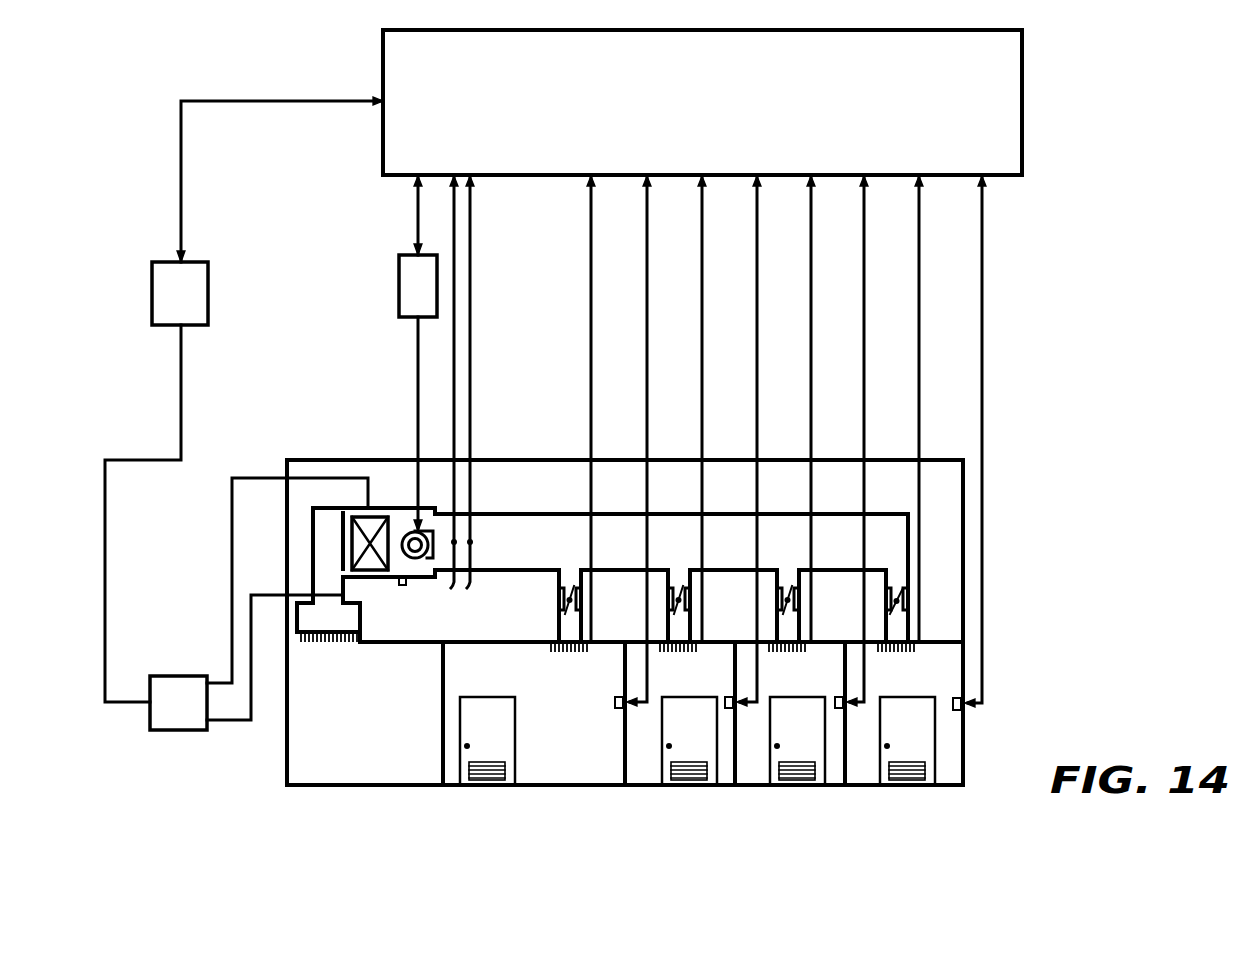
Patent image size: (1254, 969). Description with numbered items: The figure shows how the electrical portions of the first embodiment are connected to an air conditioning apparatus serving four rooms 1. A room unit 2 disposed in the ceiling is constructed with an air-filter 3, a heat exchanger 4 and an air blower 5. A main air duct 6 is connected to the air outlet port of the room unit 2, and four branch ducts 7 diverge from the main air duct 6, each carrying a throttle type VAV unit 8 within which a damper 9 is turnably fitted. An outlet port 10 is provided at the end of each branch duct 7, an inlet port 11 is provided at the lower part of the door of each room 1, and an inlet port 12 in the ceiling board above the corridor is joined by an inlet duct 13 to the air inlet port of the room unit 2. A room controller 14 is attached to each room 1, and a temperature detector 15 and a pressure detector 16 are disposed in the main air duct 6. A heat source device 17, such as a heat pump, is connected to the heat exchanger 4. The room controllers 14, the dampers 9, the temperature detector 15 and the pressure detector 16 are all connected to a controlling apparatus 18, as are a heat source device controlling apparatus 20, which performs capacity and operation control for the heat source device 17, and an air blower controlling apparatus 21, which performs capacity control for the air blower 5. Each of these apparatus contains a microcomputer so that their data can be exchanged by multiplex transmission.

The rooms 1 is at (553, 768).
The room unit 2 is at (406, 485).
The air-filter 3 is at (343, 537).
The heat exchanger 4 is at (378, 508).
The air blower 5 is at (430, 518).
The main air duct 6 is at (562, 514).
The branch ducts 7 is at (557, 622).
The throttle type VAV unit 8 is at (583, 600).
The damper 9 is at (568, 598).
The outlet port 10 is at (578, 653).
The inlet port 11 is at (486, 783).
The inlet port 12 is at (330, 646).
The inlet duct 13 is at (312, 562).
The room controller 14 is at (613, 704).
The temperature detector 15 is at (444, 398).
The pressure detector 16 is at (481, 398).
The heat source device 17 is at (173, 683).
The controlling apparatus 18 is at (1018, 114).
The heat source device controlling apparatus 20 is at (196, 266).
The air blower controlling apparatus 21 is at (396, 276).